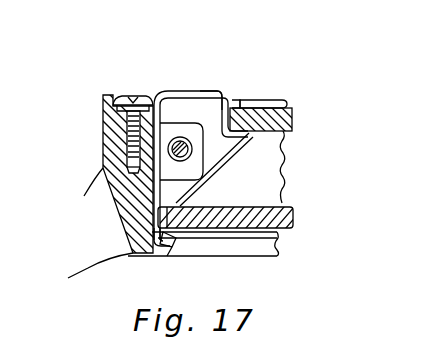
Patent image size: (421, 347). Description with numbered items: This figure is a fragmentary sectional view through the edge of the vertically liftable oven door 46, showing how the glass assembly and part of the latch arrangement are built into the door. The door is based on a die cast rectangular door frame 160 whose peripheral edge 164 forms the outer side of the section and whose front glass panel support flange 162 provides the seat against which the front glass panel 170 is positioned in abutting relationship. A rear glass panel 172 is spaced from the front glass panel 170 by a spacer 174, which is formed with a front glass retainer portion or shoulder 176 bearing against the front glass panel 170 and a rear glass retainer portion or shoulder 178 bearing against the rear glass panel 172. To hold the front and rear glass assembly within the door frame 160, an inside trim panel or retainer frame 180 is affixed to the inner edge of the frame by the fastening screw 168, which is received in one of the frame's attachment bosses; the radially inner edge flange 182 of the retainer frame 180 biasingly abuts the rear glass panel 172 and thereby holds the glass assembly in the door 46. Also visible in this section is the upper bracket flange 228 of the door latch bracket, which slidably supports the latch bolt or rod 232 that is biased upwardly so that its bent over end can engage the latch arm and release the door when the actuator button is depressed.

The oven door 46 is at (258, 257).
The door frame 160 is at (116, 258).
The front glass panel support flange 162 is at (170, 240).
The peripheral edge 164 is at (108, 177).
The screw 168 is at (133, 94).
The front glass panel 170 is at (293, 212).
The rear glass panel 172 is at (276, 122).
The spacer 174 is at (211, 181).
The front glass retainer portion 176 is at (153, 231).
The rear glass retainer portion 178 is at (249, 100).
The inside trim panel 180 is at (222, 92).
The radially inner edge flange 182 is at (241, 101).
The upper bracket flange 228 is at (171, 130).
The latch rod 232 is at (190, 150).